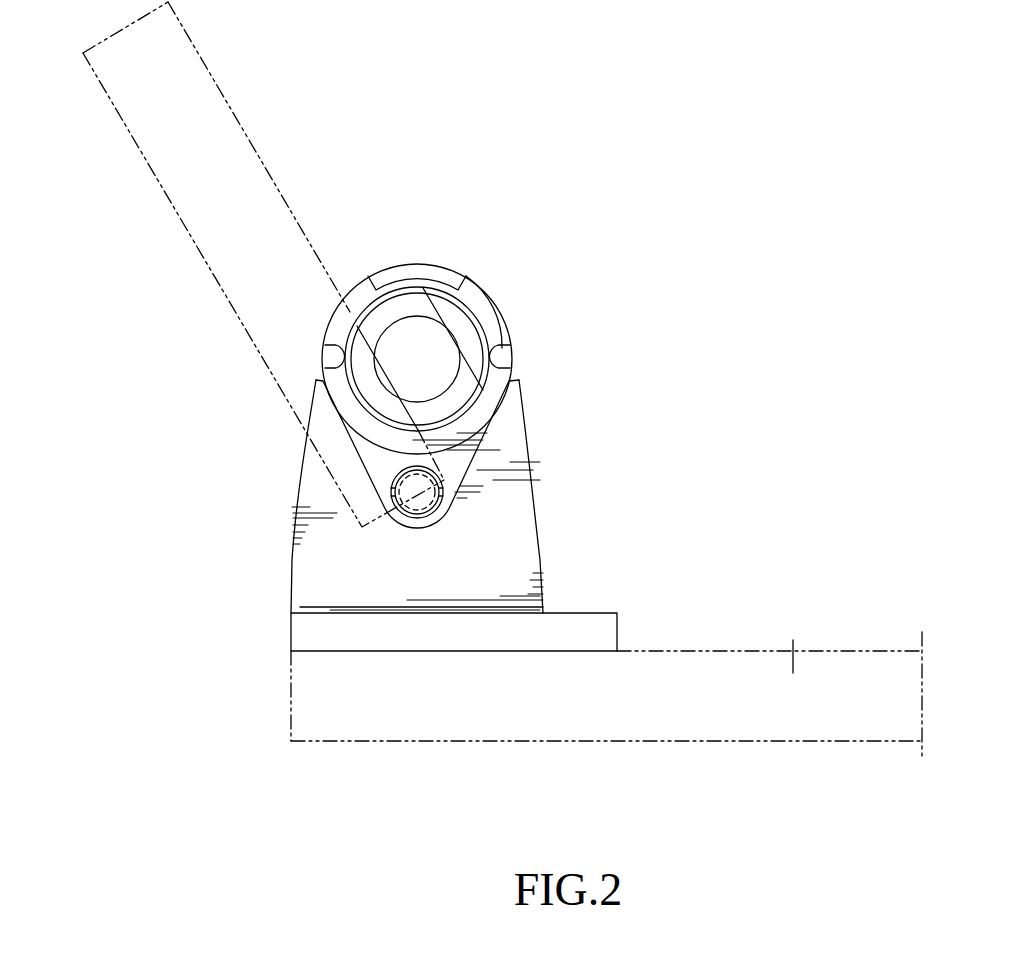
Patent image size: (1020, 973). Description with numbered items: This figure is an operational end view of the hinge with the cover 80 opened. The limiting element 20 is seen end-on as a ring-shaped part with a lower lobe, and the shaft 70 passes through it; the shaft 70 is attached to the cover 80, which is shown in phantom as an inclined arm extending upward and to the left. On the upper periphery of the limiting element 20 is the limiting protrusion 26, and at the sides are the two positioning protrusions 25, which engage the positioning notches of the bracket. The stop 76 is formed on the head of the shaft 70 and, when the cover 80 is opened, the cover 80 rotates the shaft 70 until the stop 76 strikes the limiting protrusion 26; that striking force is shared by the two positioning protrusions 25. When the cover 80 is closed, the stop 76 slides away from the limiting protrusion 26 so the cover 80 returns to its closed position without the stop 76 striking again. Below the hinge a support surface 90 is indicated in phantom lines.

The limiting element 20 is at (362, 475).
The positioning protrusions 25 is at (497, 358).
The limiting protrusion 26 is at (423, 277).
The shaft 70 is at (368, 428).
The stop 76 is at (474, 309).
The cover 80 is at (228, 143).
The support surface 90 is at (795, 632).